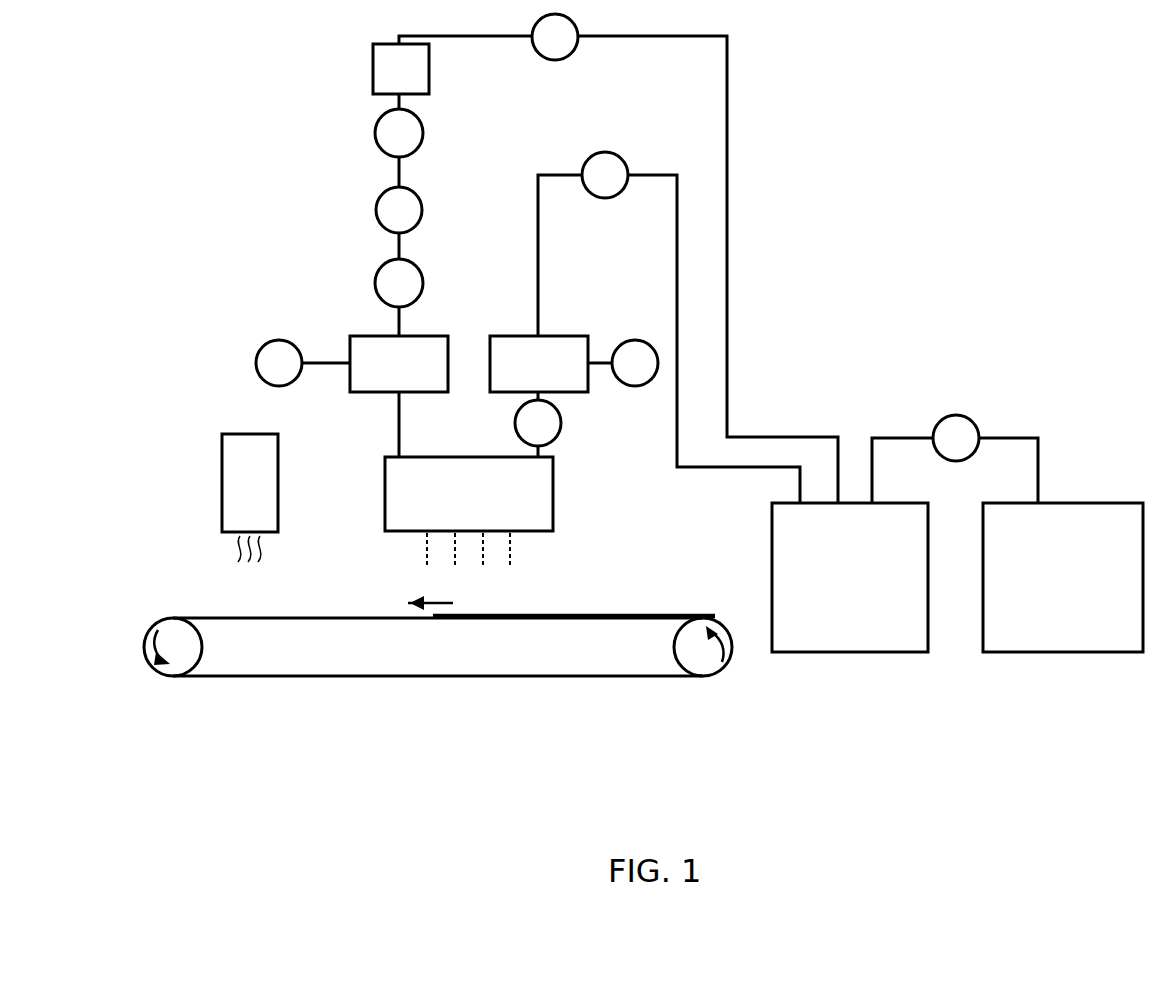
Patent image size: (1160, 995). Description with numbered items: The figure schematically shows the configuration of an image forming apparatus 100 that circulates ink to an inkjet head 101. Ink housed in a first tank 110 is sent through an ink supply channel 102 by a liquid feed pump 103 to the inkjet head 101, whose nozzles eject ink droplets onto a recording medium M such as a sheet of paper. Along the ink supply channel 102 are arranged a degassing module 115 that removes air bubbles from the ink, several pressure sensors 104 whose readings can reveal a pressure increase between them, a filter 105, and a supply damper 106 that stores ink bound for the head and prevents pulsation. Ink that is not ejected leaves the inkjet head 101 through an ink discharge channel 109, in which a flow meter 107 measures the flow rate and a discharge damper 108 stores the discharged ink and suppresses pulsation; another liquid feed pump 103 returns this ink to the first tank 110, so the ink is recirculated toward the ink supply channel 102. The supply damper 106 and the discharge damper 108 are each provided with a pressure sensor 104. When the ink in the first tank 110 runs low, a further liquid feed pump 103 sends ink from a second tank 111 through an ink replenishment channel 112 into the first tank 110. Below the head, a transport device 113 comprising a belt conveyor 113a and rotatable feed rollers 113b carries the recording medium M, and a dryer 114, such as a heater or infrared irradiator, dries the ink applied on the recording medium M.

The image forming apparatus 100 is at (1118, 86).
The inkjet head 101 is at (553, 500).
The ink supply channel 102 is at (398, 172).
The liquid feed pump 103 is at (575, 22).
The pressure sensor 104 is at (375, 133).
The filter 105 is at (422, 210).
The supply damper 106 is at (350, 340).
The flow meter 107 is at (561, 423).
The discharge damper 108 is at (588, 338).
The ink discharge channel 109 is at (540, 312).
The first tank 110 is at (830, 652).
The second tank 111 is at (1067, 652).
The ink replenishment channel 112 is at (1040, 458).
The transport device 113 is at (438, 697).
The belt conveyor 113a is at (645, 676).
The feed roller 113b is at (733, 732).
The dryer 114 is at (221, 485).
The degassing module 115 is at (372, 70).
The recording medium M is at (672, 614).